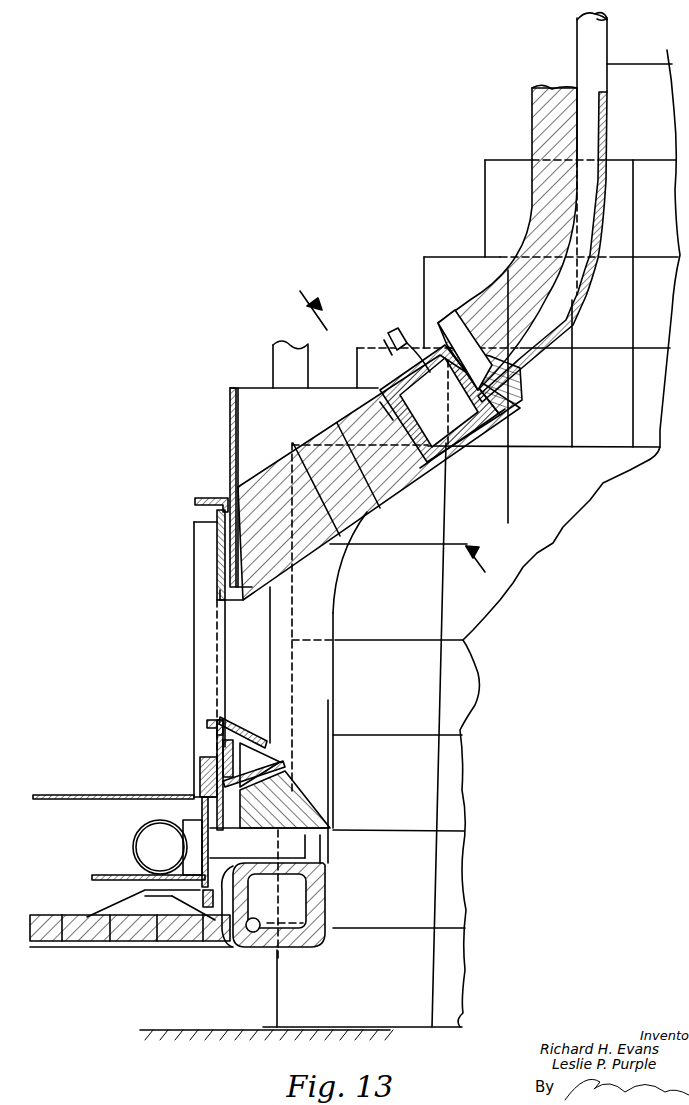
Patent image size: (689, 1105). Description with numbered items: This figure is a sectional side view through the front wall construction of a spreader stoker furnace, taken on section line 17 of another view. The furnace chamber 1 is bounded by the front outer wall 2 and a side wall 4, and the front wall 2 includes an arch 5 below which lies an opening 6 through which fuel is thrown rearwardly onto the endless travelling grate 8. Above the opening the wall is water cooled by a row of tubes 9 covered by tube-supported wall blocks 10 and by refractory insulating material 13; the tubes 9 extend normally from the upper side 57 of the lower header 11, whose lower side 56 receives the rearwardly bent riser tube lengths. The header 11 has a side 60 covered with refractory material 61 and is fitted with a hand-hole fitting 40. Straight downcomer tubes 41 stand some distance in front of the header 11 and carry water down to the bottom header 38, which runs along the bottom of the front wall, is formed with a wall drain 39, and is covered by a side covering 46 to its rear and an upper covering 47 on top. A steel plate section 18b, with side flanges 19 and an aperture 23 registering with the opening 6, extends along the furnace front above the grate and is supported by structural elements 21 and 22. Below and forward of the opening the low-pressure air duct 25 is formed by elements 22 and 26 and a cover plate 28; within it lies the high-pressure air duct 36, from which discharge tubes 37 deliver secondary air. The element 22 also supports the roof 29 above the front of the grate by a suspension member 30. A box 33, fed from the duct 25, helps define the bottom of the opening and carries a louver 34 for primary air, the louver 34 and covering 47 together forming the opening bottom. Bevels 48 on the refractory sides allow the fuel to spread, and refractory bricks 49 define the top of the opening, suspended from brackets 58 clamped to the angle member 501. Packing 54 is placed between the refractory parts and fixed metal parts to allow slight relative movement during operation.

The furnace chamber 1 is at (425, 687).
The front outer wall 2 is at (610, 128).
The side wall 4 is at (610, 300).
The arch 5 is at (562, 357).
The opening 6 is at (278, 683).
The endless travelling grate 8 is at (220, 1029).
The tube 9 is at (596, 46).
The wall block 10 is at (604, 262).
The lower header 11 is at (453, 400).
The refractory insulating material 13 is at (546, 220).
The section line XVII—XVII 17 is at (407, 425).
The plate section 18b is at (230, 598).
The side flange 19 is at (200, 577).
The structural element 21 is at (215, 497).
The structural element 22 is at (185, 820).
The aperture 23 is at (215, 668).
The low-pressure air duct 25 is at (100, 815).
The structural element 26 is at (97, 875).
The cover plate 28 is at (57, 795).
The roof 29 is at (40, 915).
The suspension member 30 is at (112, 913).
The box 33 is at (250, 762).
The louver 34 is at (253, 745).
The high-pressure air duct 36 is at (140, 840).
The discharge tube 37 is at (288, 847).
The bottom header 38 is at (305, 895).
The wall drain 39 is at (253, 933).
The hand-hole fitting 40 is at (393, 330).
The downcomer tube 41 is at (290, 368).
The side covering 46 is at (323, 917).
The upper covering 47 is at (302, 806).
The bevel 48 is at (318, 598).
The refractory brick 49 is at (352, 531).
The angle member 501 is at (231, 440).
The packing 54 is at (222, 547).
The lower side 56 is at (410, 440).
The upper side 57 is at (464, 328).
The bracket 58 is at (255, 400).
The side of header 60 is at (467, 443).
The refractory material 61 is at (447, 453).